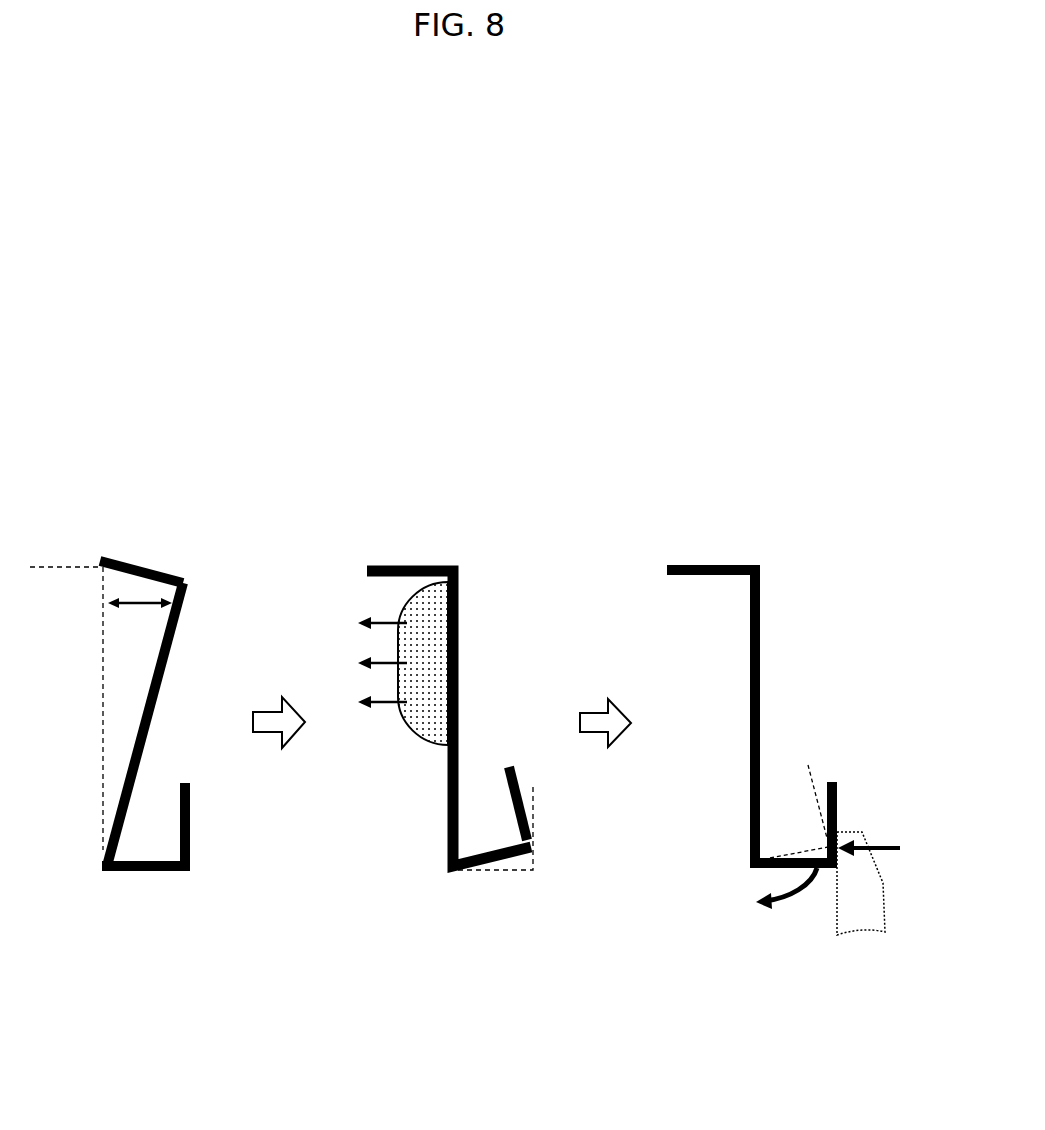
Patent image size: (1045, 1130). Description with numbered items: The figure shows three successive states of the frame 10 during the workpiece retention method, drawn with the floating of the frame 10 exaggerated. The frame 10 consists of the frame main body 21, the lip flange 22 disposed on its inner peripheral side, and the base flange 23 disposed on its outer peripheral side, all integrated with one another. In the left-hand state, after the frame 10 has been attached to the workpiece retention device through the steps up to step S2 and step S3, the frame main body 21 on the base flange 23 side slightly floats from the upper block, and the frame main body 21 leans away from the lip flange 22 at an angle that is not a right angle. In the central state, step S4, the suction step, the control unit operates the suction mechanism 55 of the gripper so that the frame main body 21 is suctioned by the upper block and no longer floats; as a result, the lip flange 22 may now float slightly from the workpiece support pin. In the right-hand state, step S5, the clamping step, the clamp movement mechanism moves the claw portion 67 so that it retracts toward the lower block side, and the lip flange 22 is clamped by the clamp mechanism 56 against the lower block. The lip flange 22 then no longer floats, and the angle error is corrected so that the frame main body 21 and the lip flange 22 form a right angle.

The frame 10 is at (186, 587).
The frame main body 21 is at (167, 662).
The lip flange 22 is at (155, 872).
The base flange 23 is at (142, 565).
The suction mechanism 55 is at (416, 734).
The clamp mechanism 56 is at (836, 918).
The claw portion 67 is at (881, 903).
The step S2 is at (146, 688).
The step S3 is at (149, 499).
The suction step S4 is at (432, 499).
The clamping step S5 is at (736, 500).